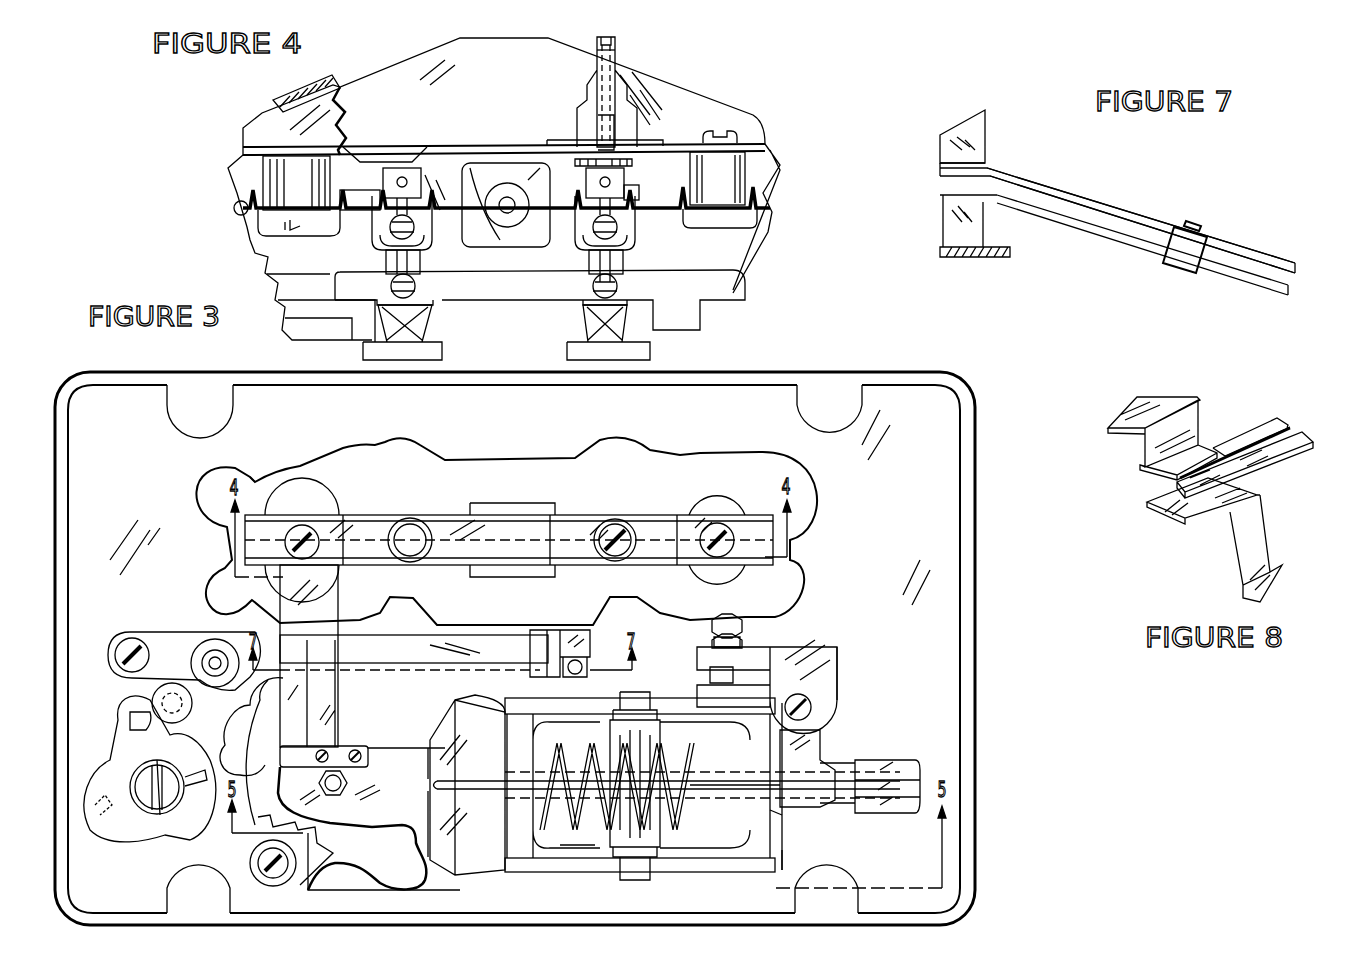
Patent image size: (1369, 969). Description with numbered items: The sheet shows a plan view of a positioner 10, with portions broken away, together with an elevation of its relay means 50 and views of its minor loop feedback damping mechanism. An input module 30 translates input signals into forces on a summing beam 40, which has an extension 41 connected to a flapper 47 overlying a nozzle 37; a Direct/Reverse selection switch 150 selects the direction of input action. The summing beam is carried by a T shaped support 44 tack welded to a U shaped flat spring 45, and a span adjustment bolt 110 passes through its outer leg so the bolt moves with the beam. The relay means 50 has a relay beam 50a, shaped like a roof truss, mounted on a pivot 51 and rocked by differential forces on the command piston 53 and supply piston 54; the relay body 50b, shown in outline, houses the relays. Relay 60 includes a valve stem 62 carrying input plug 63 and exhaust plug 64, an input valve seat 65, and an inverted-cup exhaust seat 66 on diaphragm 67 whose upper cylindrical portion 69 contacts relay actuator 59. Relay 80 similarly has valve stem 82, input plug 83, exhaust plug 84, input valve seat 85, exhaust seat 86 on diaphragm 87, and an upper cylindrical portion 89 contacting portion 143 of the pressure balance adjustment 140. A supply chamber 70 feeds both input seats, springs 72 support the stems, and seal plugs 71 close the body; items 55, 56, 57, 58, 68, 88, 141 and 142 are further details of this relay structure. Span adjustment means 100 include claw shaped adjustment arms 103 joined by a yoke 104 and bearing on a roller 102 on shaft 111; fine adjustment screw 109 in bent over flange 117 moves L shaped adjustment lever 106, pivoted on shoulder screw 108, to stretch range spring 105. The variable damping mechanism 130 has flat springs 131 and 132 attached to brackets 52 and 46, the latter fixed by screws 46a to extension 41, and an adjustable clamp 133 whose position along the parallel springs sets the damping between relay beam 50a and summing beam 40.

In FIG. 3, the positioner 10 is at (115, 457).
In FIG. 3, the input module 30 is at (364, 850).
In FIG. 3, the nozzle 37 is at (272, 640).
In FIG. 3, the summing beam 40 is at (384, 805).
In FIG. 3, the extension 41 is at (257, 752).
In FIG. 3, the T shaped support 44 is at (784, 866).
In FIG. 3, the U shaped flat spring 45 is at (790, 818).
In FIG. 7, the bracket 46 is at (984, 245).
In FIG. 8, the bracket 46 is at (1200, 527).
In FIG. 3, the bracket 46 is at (342, 668).
In FIG. 3, the screws 46a is at (372, 767).
In FIG. 3, the flapper 47 is at (258, 735).
In FIG. 4, the relay means 50 is at (479, 29).
In FIG. 3, the relay means 50 is at (489, 427).
In FIG. 4, the relay beam 50a is at (474, 109).
In FIG. 3, the relay beam 50a is at (490, 563).
In FIG. 3, the relay body 50b is at (250, 477).
In FIG. 4, the pivot 51 is at (507, 183).
In FIG. 4, the bracket 52 is at (305, 82).
In FIG. 7, the bracket 52 is at (990, 146).
In FIG. 8, the bracket 52 is at (1197, 397).
In FIG. 3, the bracket 52 is at (337, 605).
In FIG. 4, the command piston 53 is at (308, 190).
In FIG. 4, the supply piston 54 is at (704, 190).
In FIG. 4, the contact cup 55 is at (286, 233).
In FIG. 4, the contact cup 56 is at (744, 227).
In FIG. 4, the contact bar 57 is at (238, 203).
In FIG. 4, the housing wall 58 is at (762, 220).
In FIG. 3, the relay actuator 59 is at (418, 522).
In FIG. 4, the relay 60 is at (430, 230).
In FIG. 4, the valve stem 62 is at (422, 260).
In FIG. 4, the input plug 63 is at (392, 290).
In FIG. 4, the exhaust plug 64 is at (392, 250).
In FIG. 4, the input valve seat 65 is at (372, 262).
In FIG. 4, the exhaust seat 66 is at (438, 198).
In FIG. 4, the diaphragm 67 is at (382, 212).
In FIG. 4, the cup 68 is at (388, 238).
In FIG. 4, the upper cylindrical portion 69 is at (394, 180).
In FIG. 4, the supply chamber 70 is at (350, 293).
In FIG. 4, the seal plugs 71 is at (445, 350).
In FIG. 4, the springs 72 is at (445, 289).
In FIG. 4, the relay 80 is at (647, 238).
In FIG. 4, the valve stem 82 is at (623, 255).
In FIG. 4, the input plug 83 is at (617, 288).
In FIG. 4, the exhaust plug 84 is at (590, 253).
In FIG. 4, the input valve seat 85 is at (592, 270).
In FIG. 4, the exhaust seat 86 is at (582, 246).
In FIG. 4, the diaphragm 87 is at (582, 198).
In FIG. 4, the cup seat 88 is at (636, 244).
In FIG. 4, the upper cylindrical portion 89 is at (622, 193).
In FIG. 3, the span adjustment means 100 is at (654, 684).
In FIG. 3, the roller 102 is at (608, 698).
In FIG. 3, the adjustment arms 103 is at (545, 700).
In FIG. 3, the yoke 104 is at (480, 712).
In FIG. 3, the range spring 105 is at (595, 745).
In FIG. 3, the L shaped adjustment lever 106 is at (822, 760).
In FIG. 3, the shoulder screw 108 is at (814, 707).
In FIG. 3, the fine adjustment screw 109 is at (743, 640).
In FIG. 3, the span adjustment bolt 110 is at (882, 760).
In FIG. 3, the shaft 111 is at (610, 840).
In FIG. 3, the bent over flange 117 is at (838, 662).
In FIG. 3, the variable damping mechanism 130 is at (456, 624).
In FIG. 7, the flat spring 131 is at (1118, 208).
In FIG. 8, the flat spring 131 is at (1257, 402).
In FIG. 3, the flat spring 131 is at (385, 640).
In FIG. 7, the flat spring 132 is at (1083, 233).
In FIG. 8, the flat spring 132 is at (1252, 475).
In FIG. 7, the clamp 133 is at (1208, 237).
In FIG. 3, the clamp 133 is at (590, 638).
In FIG. 4, the pressure balance adjustment 140 is at (638, 29).
In FIG. 3, the pressure balance adjustment 140 is at (622, 522).
In FIG. 4, the stem 141 is at (650, 98).
In FIG. 4, the screw head 142 is at (592, 45).
In FIG. 4, the portion 143 is at (592, 148).
In FIG. 3, the Direct/Reverse selection switch 150 is at (108, 768).